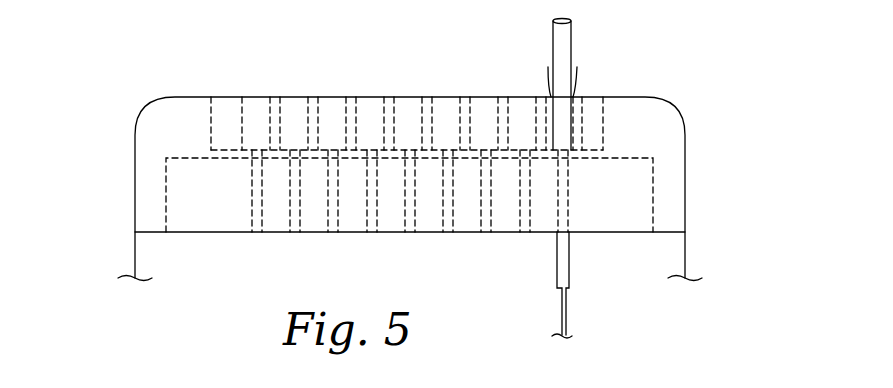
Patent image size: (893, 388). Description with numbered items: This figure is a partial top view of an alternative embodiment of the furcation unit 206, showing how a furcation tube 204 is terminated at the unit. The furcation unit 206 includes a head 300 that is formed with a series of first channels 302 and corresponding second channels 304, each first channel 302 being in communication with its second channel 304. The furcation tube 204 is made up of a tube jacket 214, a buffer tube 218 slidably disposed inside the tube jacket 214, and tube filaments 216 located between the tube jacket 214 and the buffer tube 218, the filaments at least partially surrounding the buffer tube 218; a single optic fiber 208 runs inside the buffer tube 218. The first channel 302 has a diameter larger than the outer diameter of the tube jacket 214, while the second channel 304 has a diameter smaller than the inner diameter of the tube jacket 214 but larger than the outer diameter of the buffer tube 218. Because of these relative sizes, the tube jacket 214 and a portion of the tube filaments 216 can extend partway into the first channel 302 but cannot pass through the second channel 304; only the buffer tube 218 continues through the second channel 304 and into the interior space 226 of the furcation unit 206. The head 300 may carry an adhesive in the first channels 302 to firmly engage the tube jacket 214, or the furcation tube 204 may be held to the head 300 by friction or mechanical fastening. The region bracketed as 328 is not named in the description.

The head 300 is at (672, 104).
The first channel 302 is at (613, 72).
The second channel 304 is at (557, 202).
The tube jacket 214 is at (572, 40).
The tube filaments 216 is at (578, 88).
The furcation tube 204 is at (586, 55).
The buffer tube 218 is at (569, 252).
The optic fiber 208 is at (561, 305).
The furcation unit 206 is at (104, 248).
The interior space 226 is at (651, 262).
The cap thickness 328 is at (703, 100).